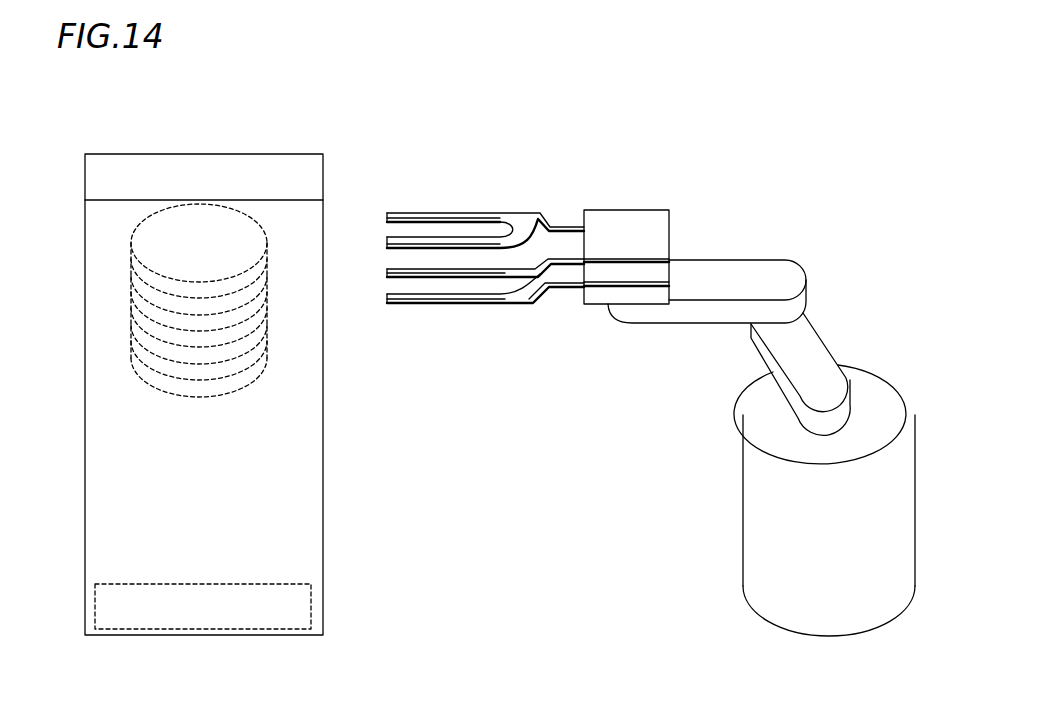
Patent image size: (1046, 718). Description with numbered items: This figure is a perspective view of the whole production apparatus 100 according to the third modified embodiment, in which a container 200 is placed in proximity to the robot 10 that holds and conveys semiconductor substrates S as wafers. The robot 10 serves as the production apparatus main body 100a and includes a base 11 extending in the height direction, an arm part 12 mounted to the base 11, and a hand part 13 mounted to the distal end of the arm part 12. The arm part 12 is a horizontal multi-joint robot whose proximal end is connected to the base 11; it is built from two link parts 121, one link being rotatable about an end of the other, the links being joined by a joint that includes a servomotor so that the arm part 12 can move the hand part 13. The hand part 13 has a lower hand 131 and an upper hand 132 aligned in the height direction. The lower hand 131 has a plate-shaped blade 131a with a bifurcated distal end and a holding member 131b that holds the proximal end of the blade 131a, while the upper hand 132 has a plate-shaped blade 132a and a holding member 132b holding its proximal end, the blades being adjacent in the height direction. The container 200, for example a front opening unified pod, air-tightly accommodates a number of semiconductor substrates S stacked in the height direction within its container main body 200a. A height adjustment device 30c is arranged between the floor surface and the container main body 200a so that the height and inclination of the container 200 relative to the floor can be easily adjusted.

The production apparatus 100 is at (893, 125).
The production apparatus main body 100a is at (817, 185).
The robot 10 is at (767, 210).
The base 11 is at (771, 532).
The arm part 12 is at (662, 418).
The link parts 121 is at (645, 312).
The hand part 13 is at (680, 185).
The lower hand 131 is at (578, 295).
The blade 131a is at (505, 304).
The holding member 131b is at (578, 298).
The upper hand 132 is at (578, 185).
The blade 132a is at (525, 225).
The holding member 132b is at (581, 224).
The container 200 is at (342, 114).
The container main body 200a is at (270, 142).
The semiconductor substrates S is at (257, 244).
The height adjustment device 30c is at (311, 609).